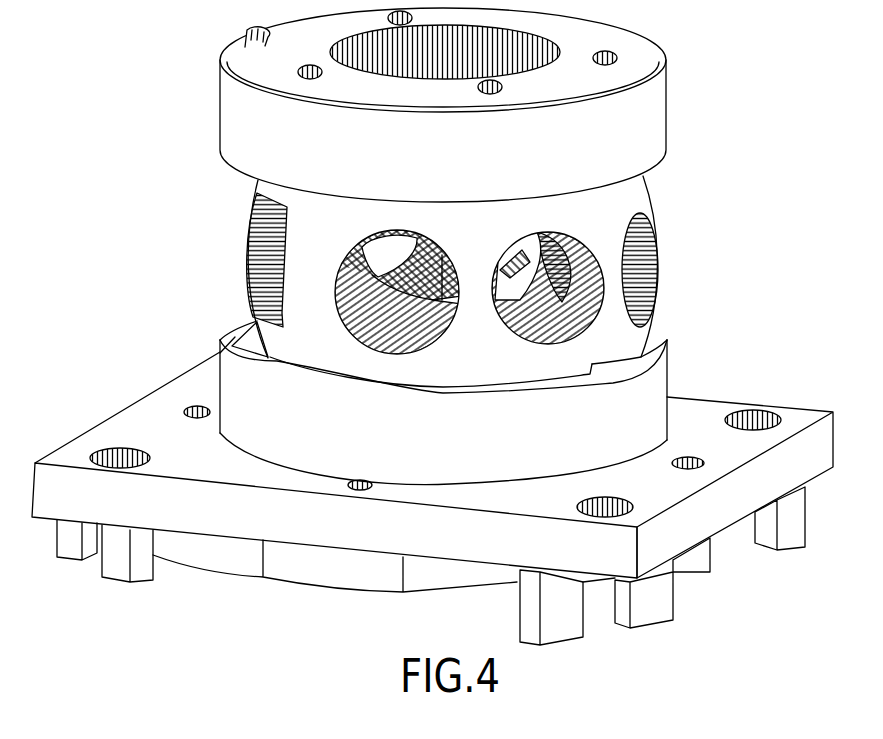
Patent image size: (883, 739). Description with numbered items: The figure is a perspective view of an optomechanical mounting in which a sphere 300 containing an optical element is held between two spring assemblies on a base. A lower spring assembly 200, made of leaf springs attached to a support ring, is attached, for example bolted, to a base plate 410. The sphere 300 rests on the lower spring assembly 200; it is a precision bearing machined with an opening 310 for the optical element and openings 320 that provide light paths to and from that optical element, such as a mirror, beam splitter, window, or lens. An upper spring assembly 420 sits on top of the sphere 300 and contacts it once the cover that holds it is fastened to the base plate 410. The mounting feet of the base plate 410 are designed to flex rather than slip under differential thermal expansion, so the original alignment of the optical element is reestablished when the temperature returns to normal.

The lower spring assembly 200 is at (668, 378).
The sphere 300 is at (653, 198).
The opening 310 is at (245, 262).
The openings 320 is at (648, 275).
The base plate 410 is at (732, 540).
The upper spring assembly 420 is at (670, 103).